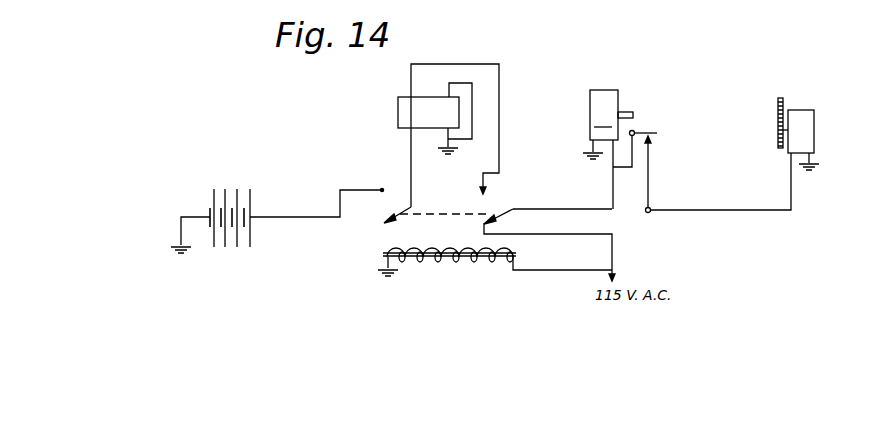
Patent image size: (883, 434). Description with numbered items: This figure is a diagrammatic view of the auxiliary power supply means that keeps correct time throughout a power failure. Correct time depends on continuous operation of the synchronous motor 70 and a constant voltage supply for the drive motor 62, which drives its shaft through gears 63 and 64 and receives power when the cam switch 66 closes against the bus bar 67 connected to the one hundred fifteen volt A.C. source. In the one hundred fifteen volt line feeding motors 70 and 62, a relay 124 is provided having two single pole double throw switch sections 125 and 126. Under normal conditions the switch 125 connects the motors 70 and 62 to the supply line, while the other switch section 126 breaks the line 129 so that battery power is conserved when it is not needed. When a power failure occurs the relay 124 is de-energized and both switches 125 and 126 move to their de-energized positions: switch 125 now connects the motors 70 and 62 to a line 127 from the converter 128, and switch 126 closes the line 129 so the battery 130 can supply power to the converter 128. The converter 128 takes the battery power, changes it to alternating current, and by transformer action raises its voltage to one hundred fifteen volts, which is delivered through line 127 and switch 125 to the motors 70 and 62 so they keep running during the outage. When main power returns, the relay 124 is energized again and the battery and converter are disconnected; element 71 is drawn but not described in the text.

The drive motor 62 is at (825, 140).
The gear 63 is at (762, 141).
The gear 64 is at (799, 110).
The cam switch 66 is at (667, 174).
The bus bar 67 is at (648, 139).
The synchronous motor 70 is at (600, 124).
The terminal 71 is at (638, 103).
The relay 124 is at (495, 276).
The switch section 125 is at (549, 245).
The switch section 126 is at (437, 224).
The line 127 is at (488, 135).
The converter 128 is at (409, 111).
The line 129 is at (317, 180).
The battery 130 is at (250, 195).